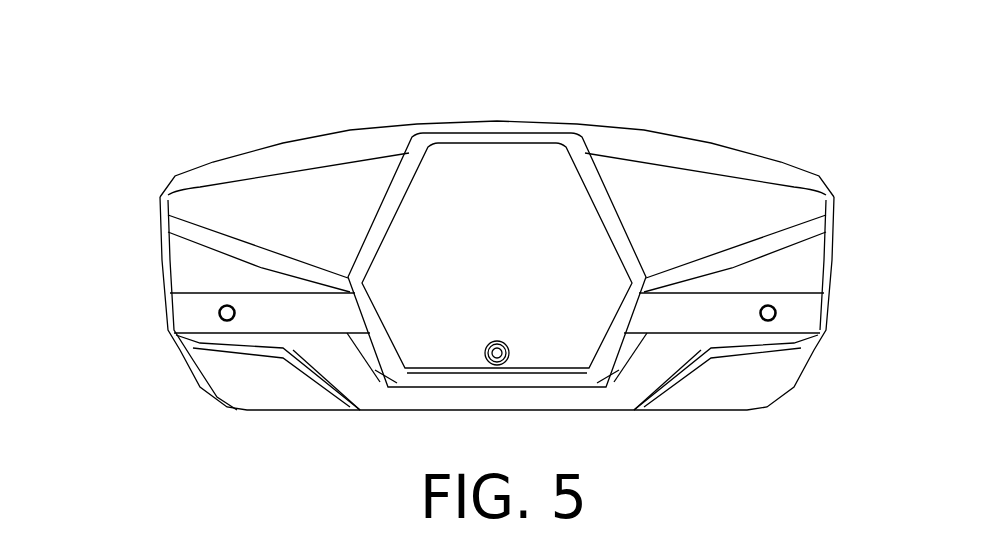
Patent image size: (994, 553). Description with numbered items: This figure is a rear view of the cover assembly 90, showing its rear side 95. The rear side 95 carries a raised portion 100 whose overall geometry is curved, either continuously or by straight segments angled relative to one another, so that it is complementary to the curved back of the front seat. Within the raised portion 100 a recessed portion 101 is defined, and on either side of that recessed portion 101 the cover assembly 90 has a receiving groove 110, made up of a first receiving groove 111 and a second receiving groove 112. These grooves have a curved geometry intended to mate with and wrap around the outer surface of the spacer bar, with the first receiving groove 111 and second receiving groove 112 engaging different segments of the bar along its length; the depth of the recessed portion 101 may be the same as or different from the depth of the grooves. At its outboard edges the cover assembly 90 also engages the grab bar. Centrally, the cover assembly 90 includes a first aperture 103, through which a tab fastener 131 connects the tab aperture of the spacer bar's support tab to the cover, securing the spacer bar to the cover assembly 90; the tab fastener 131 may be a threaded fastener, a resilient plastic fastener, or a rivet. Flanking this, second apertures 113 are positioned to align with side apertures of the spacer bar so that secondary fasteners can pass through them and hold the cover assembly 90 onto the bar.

The cover assembly 90 is at (193, 158).
The rear side 95 is at (497, 307).
The raised portion 100 is at (322, 183).
The recessed portion 101 is at (497, 260).
The first aperture 103 is at (490, 355).
The receiving groove 110 is at (500, 286).
The first receiving groove 111 is at (187, 307).
The second receiving groove 112 is at (815, 300).
The second aperture 113 is at (221, 320).
The tab fastener 131 is at (509, 345).